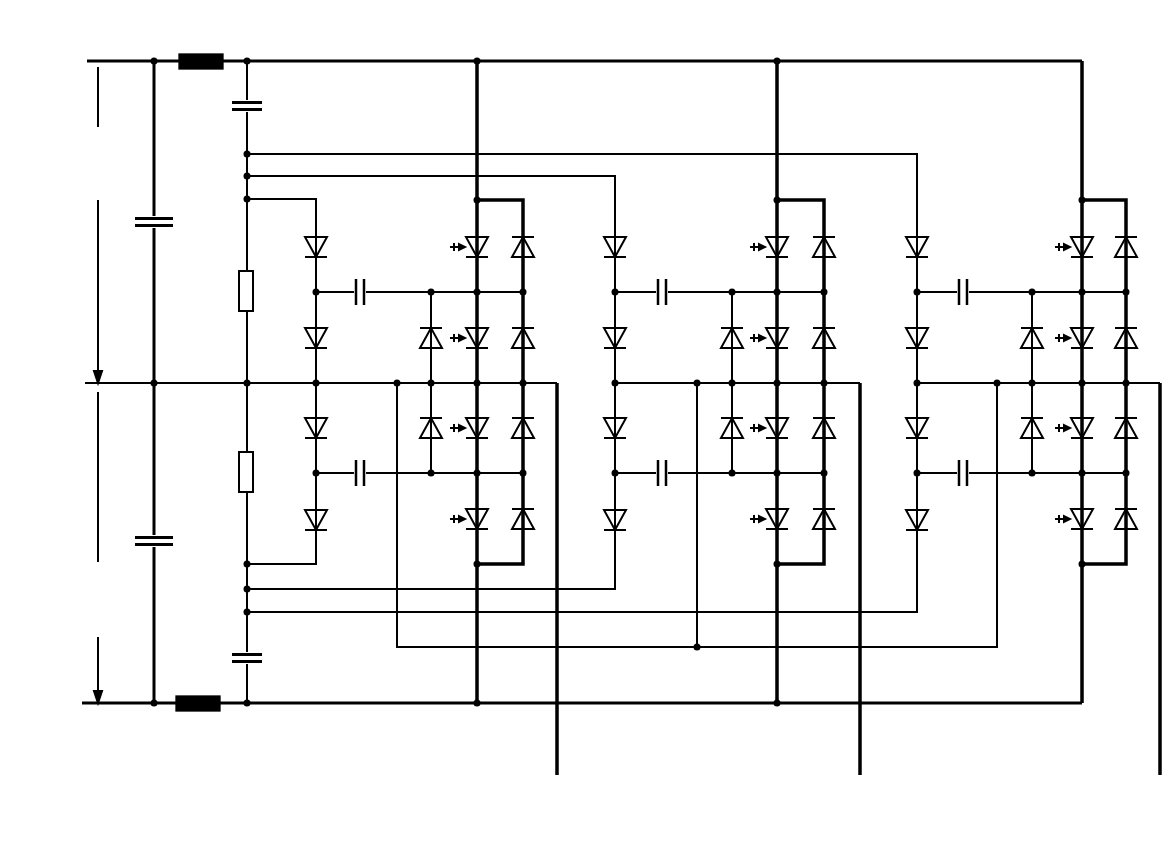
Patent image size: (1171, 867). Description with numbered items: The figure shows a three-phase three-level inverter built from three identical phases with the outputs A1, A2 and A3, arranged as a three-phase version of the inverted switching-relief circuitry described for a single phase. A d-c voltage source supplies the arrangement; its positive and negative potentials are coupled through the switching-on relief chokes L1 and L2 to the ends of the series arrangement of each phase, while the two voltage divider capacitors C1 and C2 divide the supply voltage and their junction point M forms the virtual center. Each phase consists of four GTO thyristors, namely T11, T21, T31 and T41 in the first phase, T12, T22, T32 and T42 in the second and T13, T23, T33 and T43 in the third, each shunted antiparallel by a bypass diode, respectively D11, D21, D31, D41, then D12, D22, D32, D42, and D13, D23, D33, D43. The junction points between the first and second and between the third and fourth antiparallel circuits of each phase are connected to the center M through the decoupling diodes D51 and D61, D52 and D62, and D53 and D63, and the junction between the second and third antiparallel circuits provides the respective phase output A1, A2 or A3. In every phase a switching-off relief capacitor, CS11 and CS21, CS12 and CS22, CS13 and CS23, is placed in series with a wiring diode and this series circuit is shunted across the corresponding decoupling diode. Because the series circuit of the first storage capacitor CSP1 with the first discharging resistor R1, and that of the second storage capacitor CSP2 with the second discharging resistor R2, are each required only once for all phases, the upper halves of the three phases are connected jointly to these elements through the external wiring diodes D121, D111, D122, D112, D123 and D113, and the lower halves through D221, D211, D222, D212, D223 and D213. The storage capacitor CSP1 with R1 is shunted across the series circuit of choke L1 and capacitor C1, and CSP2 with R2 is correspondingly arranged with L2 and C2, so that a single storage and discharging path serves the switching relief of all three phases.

The junction point (virtual center) M is at (112, 367).
The first switching-on relief choke L1 is at (199, 70).
The second switching-on relief choke L2 is at (195, 695).
The first storage capacitor CSP1 is at (266, 110).
The second storage capacitor CSP2 is at (276, 661).
The voltage divider capacitor C1 is at (164, 216).
The voltage divider capacitor C2 is at (166, 536).
The first discharging resistor R1 is at (238, 304).
The second discharging resistor R2 is at (238, 486).
The external wiring diode D121 is at (326, 240).
The external wiring diode D111 is at (323, 333).
The external wiring diode D211 is at (323, 420).
The external wiring diode D221 is at (323, 516).
The external wiring diode D122 is at (624, 248).
The external wiring diode D112 is at (622, 333).
The external wiring diode D212 is at (622, 420).
The external wiring diode D222 is at (622, 516).
The external wiring diode D123 is at (922, 248).
The external wiring diode D113 is at (924, 333).
The external wiring diode D213 is at (924, 420).
The external wiring diode D223 is at (924, 516).
The snubber capacitor CS11 is at (365, 281).
The snubber capacitor CS21 is at (355, 486).
The snubber capacitor CS12 is at (668, 283).
The snubber capacitor CS22 is at (657, 486).
The snubber capacitor CS13 is at (969, 283).
The snubber capacitor CS23 is at (958, 486).
The thyristor (GTO) T11 is at (483, 239).
The thyristor (GTO) T21 is at (483, 331).
The thyristor (GTO) T31 is at (483, 421).
The thyristor (GTO) T41 is at (483, 511).
The thyristor (GTO) T12 is at (783, 239).
The thyristor (GTO) T22 is at (783, 331).
The thyristor (GTO) T32 is at (783, 421).
The thyristor (GTO) T42 is at (783, 511).
The thyristor (GTO) T13 is at (1086, 239).
The thyristor (GTO) T23 is at (1086, 331).
The thyristor (GTO) T33 is at (1086, 421).
The thyristor (GTO) T43 is at (1086, 511).
The first wiring diode D11 is at (528, 238).
The wiring diode D21 is at (528, 330).
The free-wheeling diode D31 is at (514, 438).
The free-wheeling diode D41 is at (514, 528).
The third wiring diode D12 is at (829, 238).
The wiring diode D22 is at (831, 330).
The free-wheeling diode D32 is at (814, 438).
The free-wheeling diode D42 is at (814, 528).
The free-wheeling diode D13 is at (1130, 238).
The free-wheeling diode D23 is at (1130, 330).
The free-wheeling diode D33 is at (1116, 438).
The free-wheeling diode D43 is at (1116, 528).
The neutral point clamping diode D51 is at (436, 334).
The neutral point clamping diode D61 is at (436, 432).
The neutral point clamping diode D52 is at (737, 334).
The neutral point clamping diode D62 is at (737, 432).
The neutral point clamping diode D53 is at (1037, 334).
The neutral point clamping diode D63 is at (1038, 432).
The output A1 is at (556, 757).
The output A2 is at (859, 757).
The output A3 is at (1159, 757).